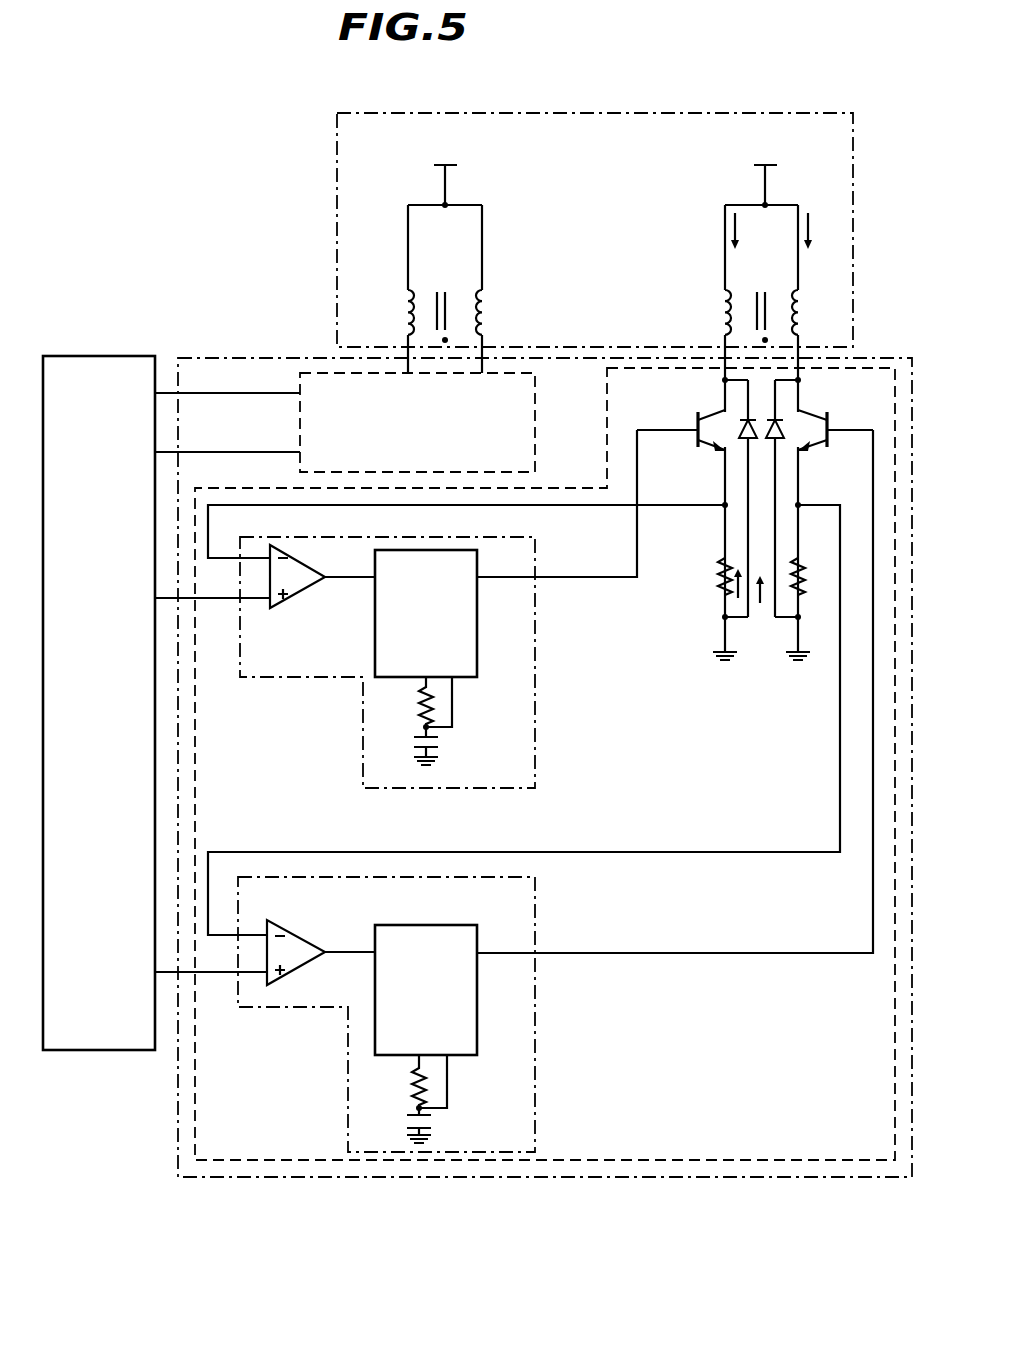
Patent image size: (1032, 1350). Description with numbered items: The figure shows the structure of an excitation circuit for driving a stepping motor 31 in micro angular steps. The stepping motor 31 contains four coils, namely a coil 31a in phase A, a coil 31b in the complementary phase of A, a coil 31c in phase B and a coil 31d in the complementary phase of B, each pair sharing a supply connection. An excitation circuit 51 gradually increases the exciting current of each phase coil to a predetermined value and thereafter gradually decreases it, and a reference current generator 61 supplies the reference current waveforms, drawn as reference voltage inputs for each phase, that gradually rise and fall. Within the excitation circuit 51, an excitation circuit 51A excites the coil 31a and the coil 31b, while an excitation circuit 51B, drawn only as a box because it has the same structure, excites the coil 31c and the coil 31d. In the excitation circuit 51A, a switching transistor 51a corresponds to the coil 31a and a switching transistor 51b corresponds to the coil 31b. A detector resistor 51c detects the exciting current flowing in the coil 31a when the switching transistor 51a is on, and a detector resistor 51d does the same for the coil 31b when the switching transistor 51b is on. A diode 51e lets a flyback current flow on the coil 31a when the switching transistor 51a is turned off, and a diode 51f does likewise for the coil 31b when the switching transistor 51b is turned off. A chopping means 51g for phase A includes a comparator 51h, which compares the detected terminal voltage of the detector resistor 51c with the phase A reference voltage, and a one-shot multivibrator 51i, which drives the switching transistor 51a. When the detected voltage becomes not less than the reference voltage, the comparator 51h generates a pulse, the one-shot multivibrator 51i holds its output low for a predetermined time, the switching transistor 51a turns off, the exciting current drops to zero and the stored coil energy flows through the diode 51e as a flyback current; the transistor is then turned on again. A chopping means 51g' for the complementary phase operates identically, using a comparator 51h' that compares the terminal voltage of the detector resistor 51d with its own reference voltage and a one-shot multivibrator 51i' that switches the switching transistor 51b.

The stepping motor 31 is at (705, 113).
The coil in phase A 31a is at (805, 312).
The coil in phase *A 31b is at (720, 312).
The coil in phase B 31c is at (490, 310).
The coil in phase *B 31d is at (402, 312).
The excitation circuit 51 is at (395, 1177).
The excitation circuit for phases A and *A 51A is at (733, 1156).
The excitation circuit for phases B and *B 51B is at (313, 380).
The switching transistor 51a is at (835, 426).
The switching transistor 51b is at (698, 418).
The detector resistor 51c is at (805, 575).
The detector resistor 51d is at (718, 575).
The diode 51e is at (767, 478).
The diode 51f is at (738, 478).
The chopping means 51g is at (386, 1014).
The chopping means 51g' is at (387, 662).
The comparator 51h is at (321, 937).
The comparator 51h' is at (322, 605).
The one-shot multivibrator 51i is at (444, 1016).
The one-shot multivibrator 51i' is at (450, 657).
The reference current generator 61 is at (92, 355).